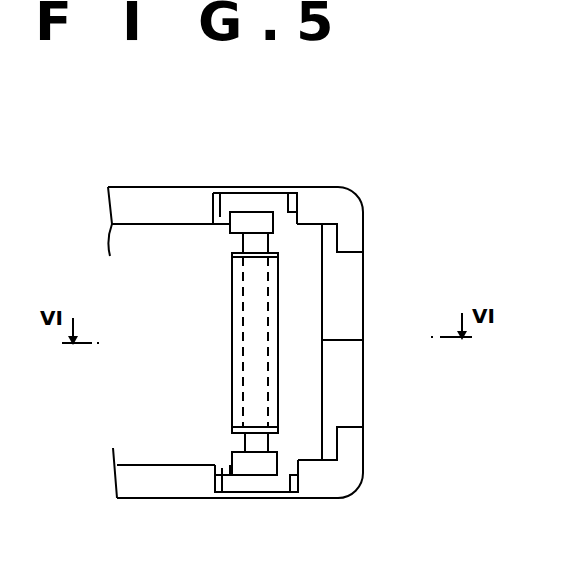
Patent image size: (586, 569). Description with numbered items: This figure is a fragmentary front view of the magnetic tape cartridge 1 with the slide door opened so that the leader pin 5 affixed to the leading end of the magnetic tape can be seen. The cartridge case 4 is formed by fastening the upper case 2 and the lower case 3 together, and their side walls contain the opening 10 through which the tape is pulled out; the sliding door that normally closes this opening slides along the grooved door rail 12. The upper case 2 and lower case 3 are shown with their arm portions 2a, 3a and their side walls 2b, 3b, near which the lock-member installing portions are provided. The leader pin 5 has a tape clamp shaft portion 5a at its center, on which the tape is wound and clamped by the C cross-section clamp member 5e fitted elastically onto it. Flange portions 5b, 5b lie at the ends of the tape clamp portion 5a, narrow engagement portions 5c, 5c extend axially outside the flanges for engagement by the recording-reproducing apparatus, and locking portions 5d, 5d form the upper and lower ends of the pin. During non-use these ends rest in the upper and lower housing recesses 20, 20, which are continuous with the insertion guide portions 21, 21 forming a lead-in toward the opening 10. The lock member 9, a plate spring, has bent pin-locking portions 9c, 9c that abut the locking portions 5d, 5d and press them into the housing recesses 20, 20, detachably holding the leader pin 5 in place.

The magnetic tape cartridge 1 is at (34, 142).
The upper case 2 is at (342, 197).
The arm portion of first hinge member 2a is at (172, 190).
The side wall of upper case 2b is at (352, 268).
The lower case 3 is at (352, 472).
The arm portion of second hinge member 3a is at (138, 488).
The side wall of lower case 3b is at (352, 386).
The cartridge case 4 is at (370, 330).
The leader pin 5 is at (222, 330).
The tape clamp shaft portion 5a is at (244, 290).
The flange portions 5b is at (278, 257).
The engagement portions 5c is at (243, 242).
The locking portions 5d is at (245, 215).
The clamp member 5e is at (232, 358).
The lock member 9 is at (312, 451).
The pin-locking portions 9c is at (283, 212).
The opening 10 is at (136, 240).
The door rail 12 is at (213, 474).
The housing recesses 20 is at (232, 227).
The insertion guide portions 21 is at (263, 198).